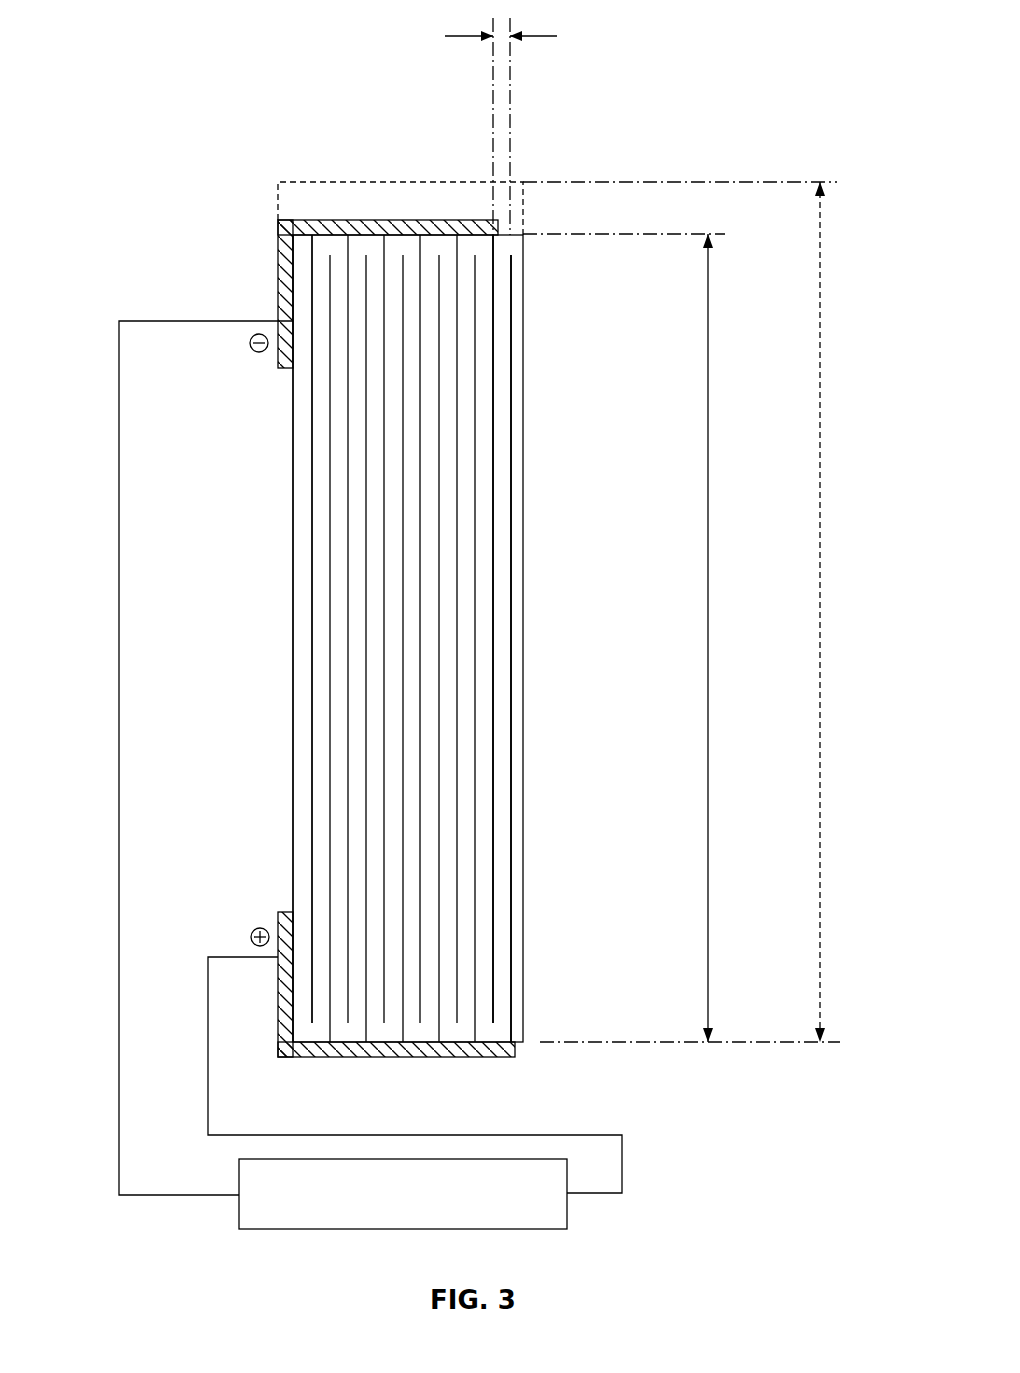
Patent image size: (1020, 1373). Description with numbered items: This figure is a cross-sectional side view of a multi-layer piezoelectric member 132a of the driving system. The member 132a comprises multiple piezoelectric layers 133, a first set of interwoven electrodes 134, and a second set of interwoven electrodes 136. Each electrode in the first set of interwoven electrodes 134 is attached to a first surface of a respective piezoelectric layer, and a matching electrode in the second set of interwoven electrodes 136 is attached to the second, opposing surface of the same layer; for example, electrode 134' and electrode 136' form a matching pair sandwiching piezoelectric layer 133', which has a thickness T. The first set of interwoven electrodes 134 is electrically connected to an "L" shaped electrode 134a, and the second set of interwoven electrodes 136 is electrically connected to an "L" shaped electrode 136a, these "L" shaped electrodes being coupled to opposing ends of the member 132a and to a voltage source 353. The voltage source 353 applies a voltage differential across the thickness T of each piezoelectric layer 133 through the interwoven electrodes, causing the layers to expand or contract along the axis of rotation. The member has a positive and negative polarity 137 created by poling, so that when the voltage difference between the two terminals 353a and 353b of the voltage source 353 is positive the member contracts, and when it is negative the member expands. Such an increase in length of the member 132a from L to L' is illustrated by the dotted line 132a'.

The member 132a is at (523, 549).
The dotted line 132a' is at (344, 200).
The "L" shaped electrode 136a is at (410, 220).
The "L" shaped electrode 134a is at (480, 1057).
The second set of interwoven electrodes 136 is at (455, 629).
The electrode 136' is at (550, 629).
The first set of interwoven electrodes 134 is at (413, 648).
The electrode 134' is at (566, 648).
The piezoelectric layers 133 is at (259, 638).
The piezoelectric layer 133' is at (551, 638).
The positive and negative polarity 137 is at (250, 343).
The voltage source 353 is at (517, 1230).
The terminal 353a is at (610, 1133).
The terminal 353b is at (119, 1090).
The thickness T is at (465, 36).
The length L is at (681, 612).
The increased length L' is at (846, 612).